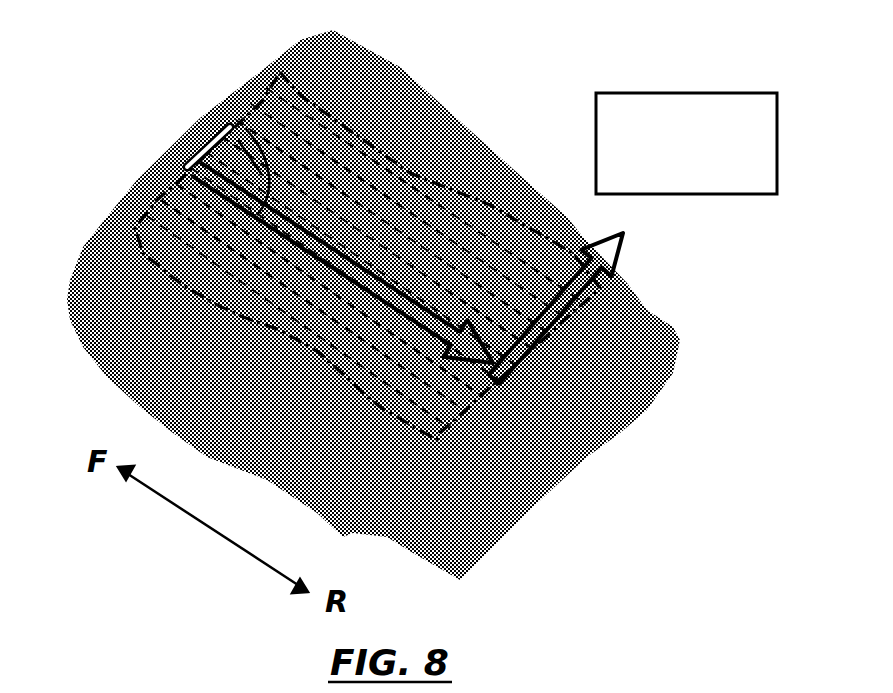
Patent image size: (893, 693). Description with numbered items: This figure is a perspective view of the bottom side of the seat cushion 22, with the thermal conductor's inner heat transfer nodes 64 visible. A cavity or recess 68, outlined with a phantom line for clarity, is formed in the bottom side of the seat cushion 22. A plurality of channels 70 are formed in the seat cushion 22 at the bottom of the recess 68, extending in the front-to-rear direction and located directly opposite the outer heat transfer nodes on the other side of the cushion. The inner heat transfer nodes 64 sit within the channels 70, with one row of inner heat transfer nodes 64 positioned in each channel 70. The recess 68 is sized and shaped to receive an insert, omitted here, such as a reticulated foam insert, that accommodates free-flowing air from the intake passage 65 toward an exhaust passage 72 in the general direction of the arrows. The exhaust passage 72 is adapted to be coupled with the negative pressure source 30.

The seat cushion 22 is at (337, 43).
The negative pressure source 30 is at (610, 92).
The inner heat transfer nodes 64 is at (467, 228).
The intake passage 65 is at (187, 165).
The recess 68 is at (280, 72).
The channels 70 is at (252, 168).
The exhaust passage 72 is at (600, 275).